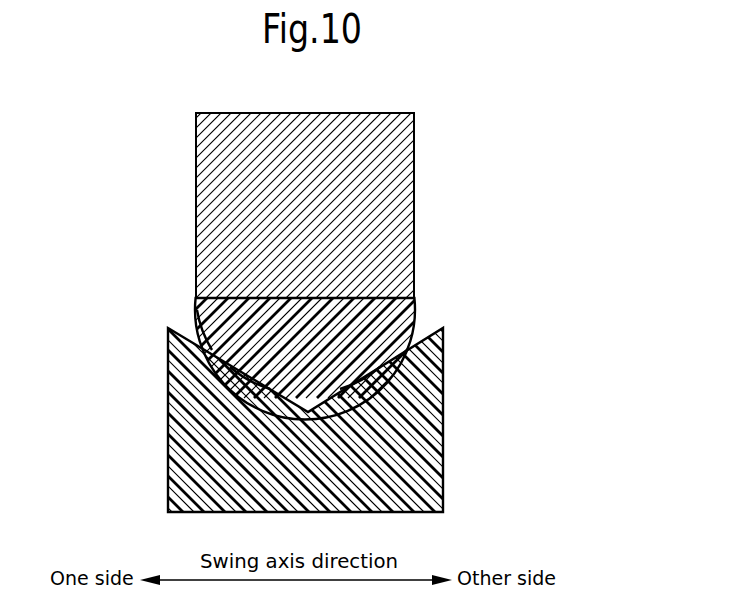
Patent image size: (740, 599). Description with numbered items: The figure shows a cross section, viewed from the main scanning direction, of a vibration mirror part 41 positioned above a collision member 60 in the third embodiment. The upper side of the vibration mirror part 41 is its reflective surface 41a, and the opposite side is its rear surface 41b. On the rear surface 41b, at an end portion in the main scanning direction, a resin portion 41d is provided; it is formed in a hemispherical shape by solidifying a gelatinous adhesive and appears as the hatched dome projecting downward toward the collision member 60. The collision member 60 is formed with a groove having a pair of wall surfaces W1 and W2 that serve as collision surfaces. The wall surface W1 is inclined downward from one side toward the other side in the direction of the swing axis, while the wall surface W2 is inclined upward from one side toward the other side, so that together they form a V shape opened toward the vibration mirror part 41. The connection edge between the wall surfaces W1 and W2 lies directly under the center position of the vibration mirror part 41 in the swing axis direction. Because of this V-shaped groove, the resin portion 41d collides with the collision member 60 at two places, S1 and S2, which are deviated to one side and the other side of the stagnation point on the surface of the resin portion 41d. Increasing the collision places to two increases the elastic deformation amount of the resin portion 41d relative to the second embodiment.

The vibration mirror part 41 is at (377, 193).
The reflective surface 41a is at (311, 113).
The rear surface 41b is at (377, 313).
The resin portion 41d is at (235, 314).
The collision member 60 is at (452, 460).
The wall surface W1 is at (208, 352).
The wall surface W2 is at (402, 353).
The collision place S1 is at (252, 374).
The collision place S2 is at (363, 378).